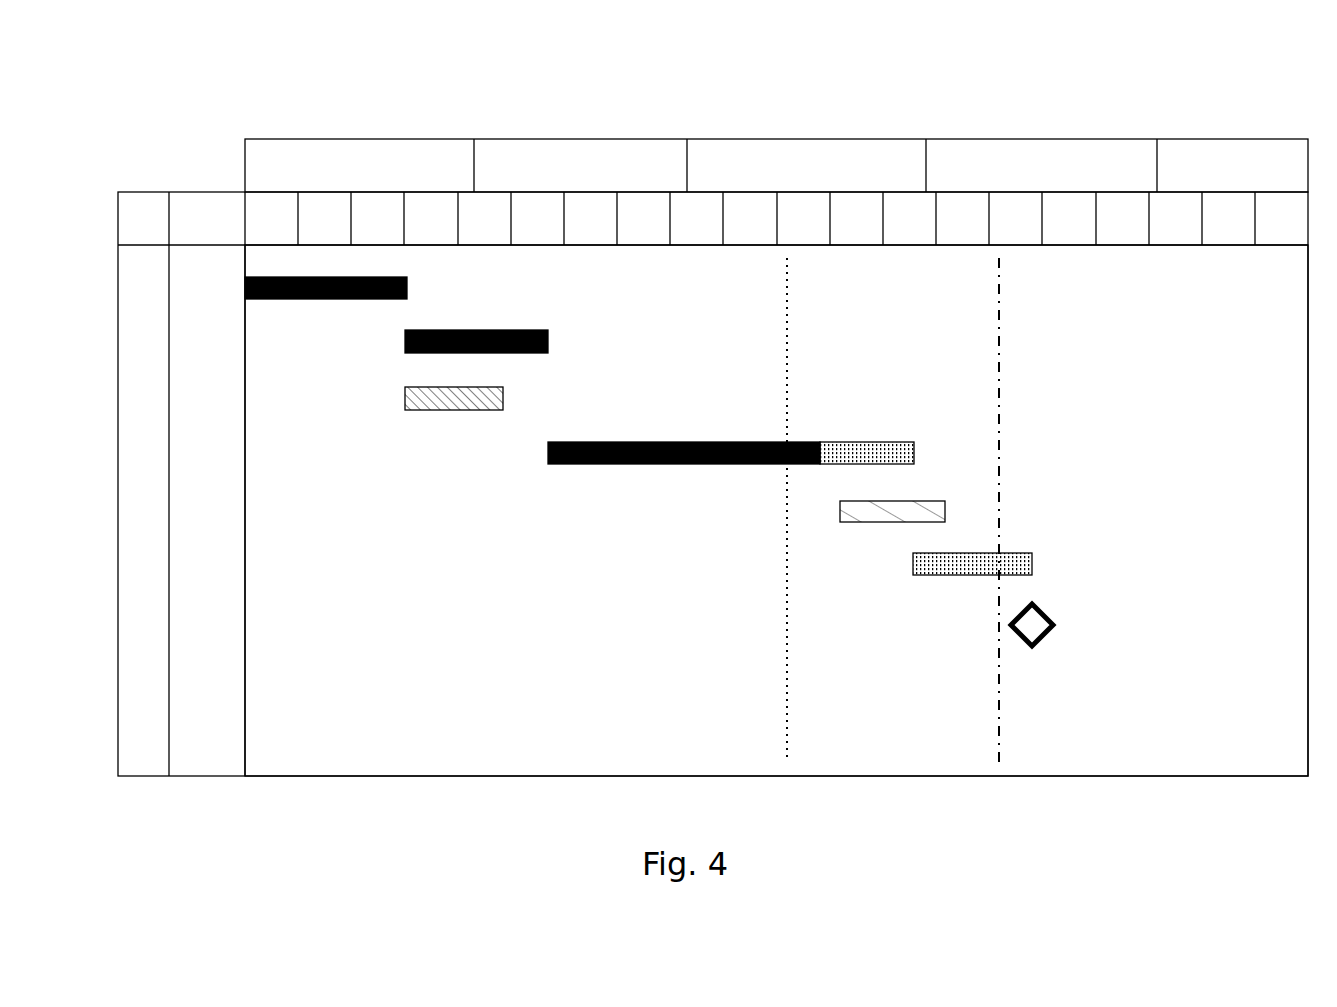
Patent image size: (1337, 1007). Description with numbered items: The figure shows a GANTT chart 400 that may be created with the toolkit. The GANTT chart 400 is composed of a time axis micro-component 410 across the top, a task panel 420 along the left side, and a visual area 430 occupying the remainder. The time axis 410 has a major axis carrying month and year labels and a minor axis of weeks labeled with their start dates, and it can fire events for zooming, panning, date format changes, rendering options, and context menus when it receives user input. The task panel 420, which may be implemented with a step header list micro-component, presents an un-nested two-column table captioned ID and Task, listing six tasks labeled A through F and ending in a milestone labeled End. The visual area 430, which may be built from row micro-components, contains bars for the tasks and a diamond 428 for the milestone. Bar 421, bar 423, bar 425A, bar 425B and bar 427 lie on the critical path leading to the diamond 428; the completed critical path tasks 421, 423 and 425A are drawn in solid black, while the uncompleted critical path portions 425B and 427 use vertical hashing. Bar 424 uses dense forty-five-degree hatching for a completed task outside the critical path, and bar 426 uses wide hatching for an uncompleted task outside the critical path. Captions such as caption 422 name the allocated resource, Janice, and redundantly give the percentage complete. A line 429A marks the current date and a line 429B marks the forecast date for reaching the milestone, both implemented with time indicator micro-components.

The GANTT chart 400 is at (160, 62).
The time axis micro-component 410 is at (262, 152).
The task panel 420 is at (193, 193).
The bar 421 is at (270, 299).
The caption 422 is at (587, 282).
The bar 423 is at (407, 356).
The bar 424 is at (452, 408).
The bar 425A is at (607, 465).
The bar 425B is at (857, 440).
The bar 426 is at (908, 518).
The bar 427 is at (950, 570).
The diamond 428 is at (1040, 638).
The line 429A is at (787, 367).
The line 429B is at (1005, 368).
The visual area 430 is at (313, 762).